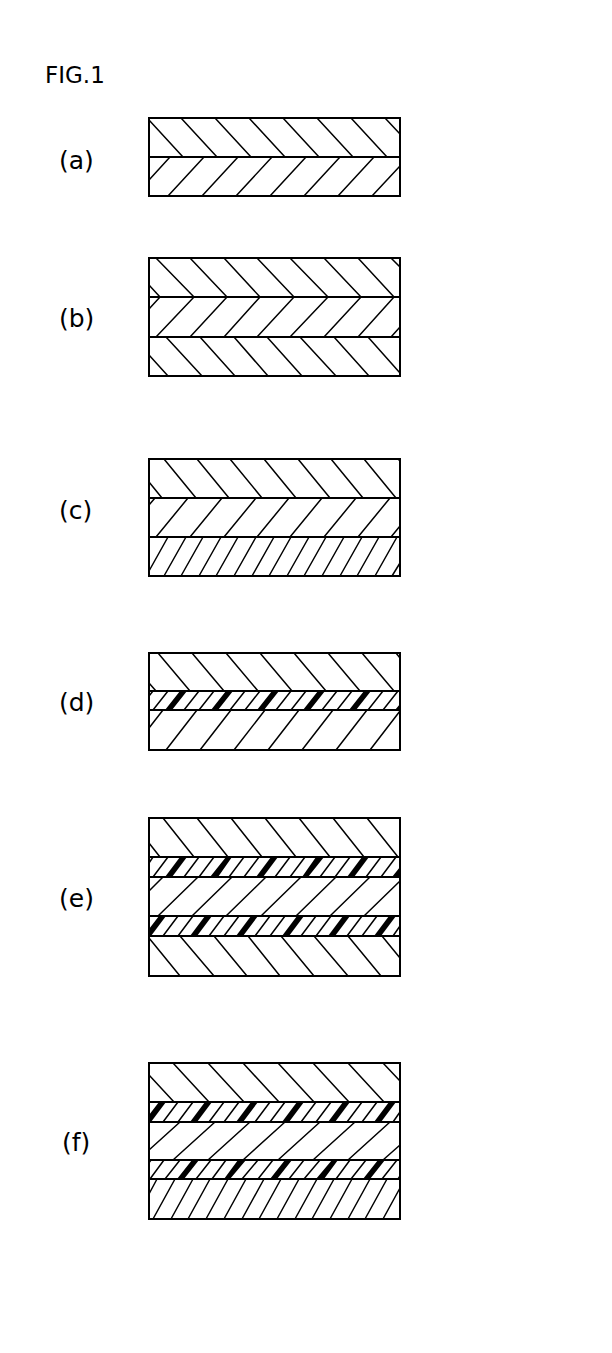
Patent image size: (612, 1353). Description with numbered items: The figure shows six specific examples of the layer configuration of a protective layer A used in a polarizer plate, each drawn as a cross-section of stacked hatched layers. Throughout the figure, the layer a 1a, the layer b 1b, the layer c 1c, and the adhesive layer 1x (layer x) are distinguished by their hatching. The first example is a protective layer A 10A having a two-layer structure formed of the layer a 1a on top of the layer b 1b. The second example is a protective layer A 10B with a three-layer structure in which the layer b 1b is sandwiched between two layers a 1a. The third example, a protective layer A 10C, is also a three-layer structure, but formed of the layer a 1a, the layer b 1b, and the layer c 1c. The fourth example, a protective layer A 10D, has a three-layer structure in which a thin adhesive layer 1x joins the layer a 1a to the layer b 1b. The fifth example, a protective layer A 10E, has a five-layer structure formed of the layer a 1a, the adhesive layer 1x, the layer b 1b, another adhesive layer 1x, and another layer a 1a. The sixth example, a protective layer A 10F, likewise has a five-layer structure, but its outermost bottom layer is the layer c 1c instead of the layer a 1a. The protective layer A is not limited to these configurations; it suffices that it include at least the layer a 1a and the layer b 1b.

The layer a 1a is at (389, 138).
The layer b 1b is at (389, 181).
The layer c 1c is at (389, 560).
The adhesive layer 1x is at (389, 701).
The protective layer A 10A is at (472, 118).
The protective layer A 10B is at (472, 258).
The protective layer A 10C is at (472, 459).
The protective layer A 10D is at (472, 653).
The protective layer A 10E is at (472, 818).
The protective layer A 10F is at (472, 1063).